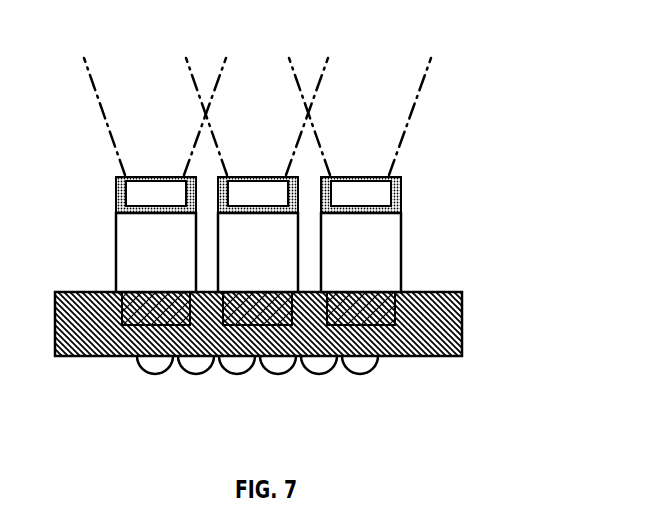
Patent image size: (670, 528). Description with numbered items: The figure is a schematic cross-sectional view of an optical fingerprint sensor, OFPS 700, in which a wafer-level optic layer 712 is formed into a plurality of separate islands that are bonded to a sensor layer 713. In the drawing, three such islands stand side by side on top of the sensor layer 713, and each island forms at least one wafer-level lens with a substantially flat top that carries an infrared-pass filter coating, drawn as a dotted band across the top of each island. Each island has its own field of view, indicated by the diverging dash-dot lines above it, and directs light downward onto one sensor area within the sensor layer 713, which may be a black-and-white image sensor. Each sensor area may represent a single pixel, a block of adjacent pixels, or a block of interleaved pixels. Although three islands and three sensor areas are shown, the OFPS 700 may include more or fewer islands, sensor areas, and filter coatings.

The OFPS 700 is at (562, 336).
The wafer-level optic layer 712 is at (438, 254).
The sensor layer 713 is at (462, 353).